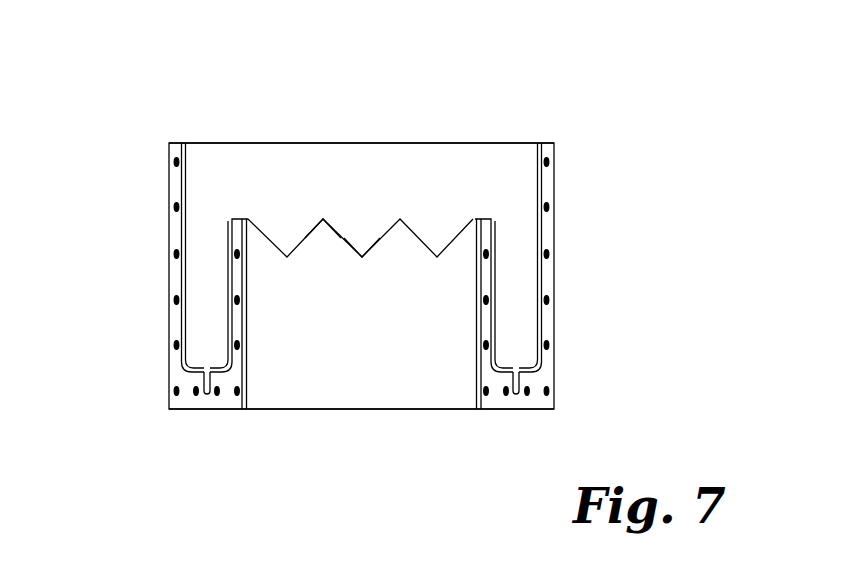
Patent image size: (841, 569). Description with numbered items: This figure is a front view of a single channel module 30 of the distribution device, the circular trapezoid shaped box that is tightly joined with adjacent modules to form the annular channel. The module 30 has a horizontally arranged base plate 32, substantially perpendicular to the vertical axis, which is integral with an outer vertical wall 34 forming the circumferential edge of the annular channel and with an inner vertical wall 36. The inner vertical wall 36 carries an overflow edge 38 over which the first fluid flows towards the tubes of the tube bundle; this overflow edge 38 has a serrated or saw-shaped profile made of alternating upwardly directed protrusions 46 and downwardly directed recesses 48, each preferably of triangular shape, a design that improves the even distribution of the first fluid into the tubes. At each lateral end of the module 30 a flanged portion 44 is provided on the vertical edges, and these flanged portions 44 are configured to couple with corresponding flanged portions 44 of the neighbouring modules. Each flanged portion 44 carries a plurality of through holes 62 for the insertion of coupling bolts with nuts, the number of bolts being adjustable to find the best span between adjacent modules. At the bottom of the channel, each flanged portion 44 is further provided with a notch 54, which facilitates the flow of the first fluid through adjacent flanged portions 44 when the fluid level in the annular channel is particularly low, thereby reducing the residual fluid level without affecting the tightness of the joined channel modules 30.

The channel module 30 is at (514, 112).
The base plate 32 is at (409, 410).
The outer vertical wall 34 is at (240, 165).
The inner vertical wall 36 is at (318, 388).
The overflow edge 38 is at (457, 237).
The flanged portion 44 is at (175, 231).
The protrusion 46 is at (323, 219).
The recess 48 is at (362, 257).
The notch 54 is at (207, 395).
The through hole 62 is at (174, 392).